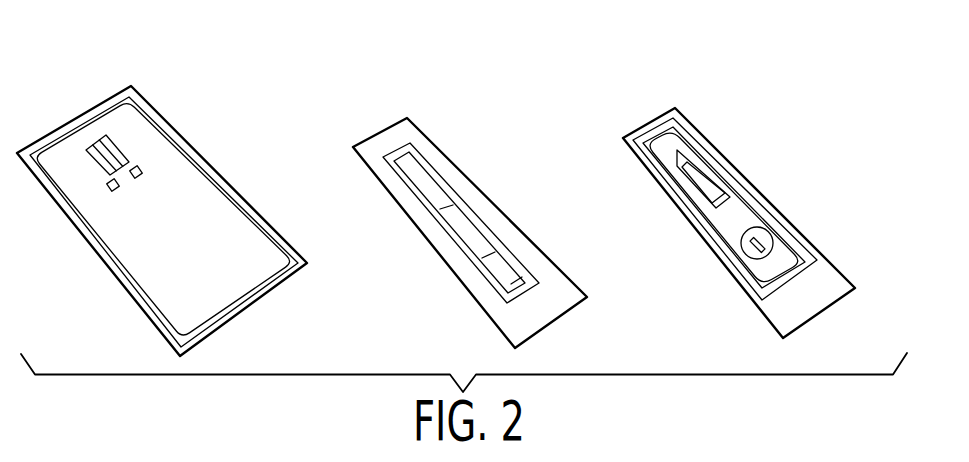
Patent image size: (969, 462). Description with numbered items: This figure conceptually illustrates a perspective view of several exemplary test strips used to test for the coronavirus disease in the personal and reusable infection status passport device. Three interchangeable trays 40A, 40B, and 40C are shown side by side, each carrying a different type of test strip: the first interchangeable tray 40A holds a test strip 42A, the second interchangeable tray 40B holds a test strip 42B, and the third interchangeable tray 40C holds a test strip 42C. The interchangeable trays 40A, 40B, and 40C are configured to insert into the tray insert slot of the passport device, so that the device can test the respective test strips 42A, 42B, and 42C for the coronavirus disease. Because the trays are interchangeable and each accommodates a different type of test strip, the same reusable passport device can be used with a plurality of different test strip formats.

The interchangeable tray 40A is at (185, 135).
The test strip 42A is at (128, 125).
The interchangeable tray 40B is at (495, 202).
The test strip 42B is at (417, 182).
The interchangeable tray 40C is at (778, 207).
The test strip 42C is at (673, 145).